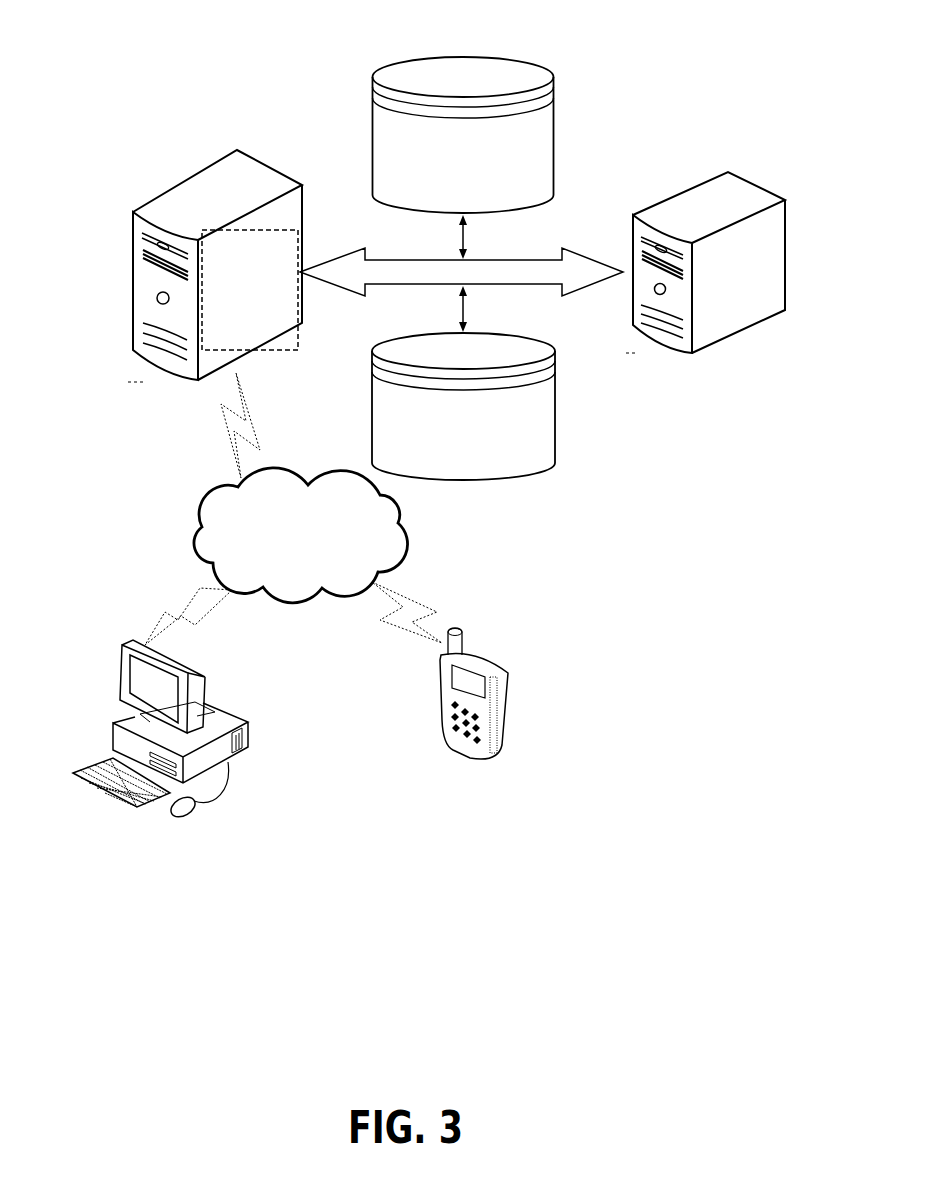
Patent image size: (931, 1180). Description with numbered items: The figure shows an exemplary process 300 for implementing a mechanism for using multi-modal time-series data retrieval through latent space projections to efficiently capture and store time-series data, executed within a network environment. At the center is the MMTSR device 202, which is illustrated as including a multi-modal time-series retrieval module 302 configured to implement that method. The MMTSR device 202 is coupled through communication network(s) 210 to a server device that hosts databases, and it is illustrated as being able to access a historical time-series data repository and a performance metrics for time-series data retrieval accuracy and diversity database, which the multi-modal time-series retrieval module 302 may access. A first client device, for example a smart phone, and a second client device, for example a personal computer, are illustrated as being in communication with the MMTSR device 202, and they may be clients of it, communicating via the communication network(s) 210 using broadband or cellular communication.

The exemplary process 300 is at (135, 89).
The MMTSR device 202 is at (148, 216).
The multi-modal time-series retrieval module 302 is at (250, 290).
The communication network(s) 210 is at (408, 409).